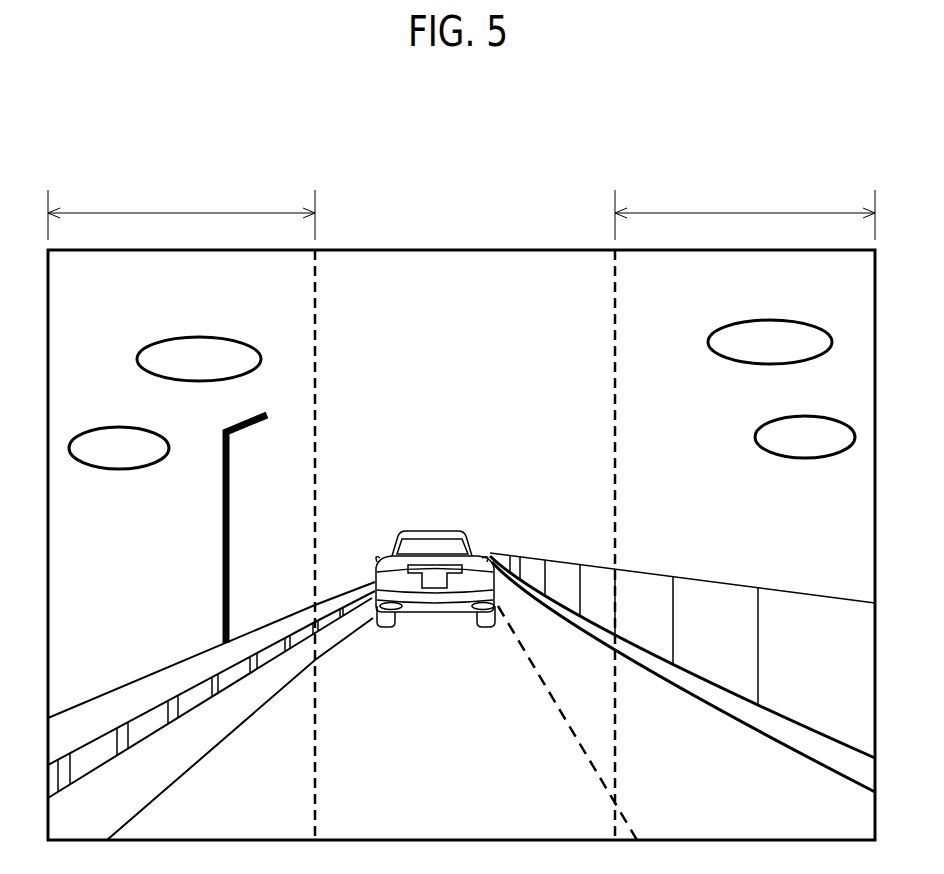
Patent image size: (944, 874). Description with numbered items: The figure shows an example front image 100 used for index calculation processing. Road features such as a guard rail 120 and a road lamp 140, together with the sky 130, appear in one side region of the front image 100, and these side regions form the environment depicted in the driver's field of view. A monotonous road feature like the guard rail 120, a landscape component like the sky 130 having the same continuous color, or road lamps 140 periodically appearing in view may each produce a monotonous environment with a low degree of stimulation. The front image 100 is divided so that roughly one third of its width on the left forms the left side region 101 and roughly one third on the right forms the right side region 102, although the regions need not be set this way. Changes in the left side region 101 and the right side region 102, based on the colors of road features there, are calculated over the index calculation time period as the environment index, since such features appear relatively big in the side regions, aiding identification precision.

The front image 100 is at (475, 249).
The left side region 101 is at (181, 210).
The right side region 102 is at (745, 210).
The guard rail 120 is at (98, 695).
The sky 130 is at (133, 295).
The road lamp 140 is at (222, 520).